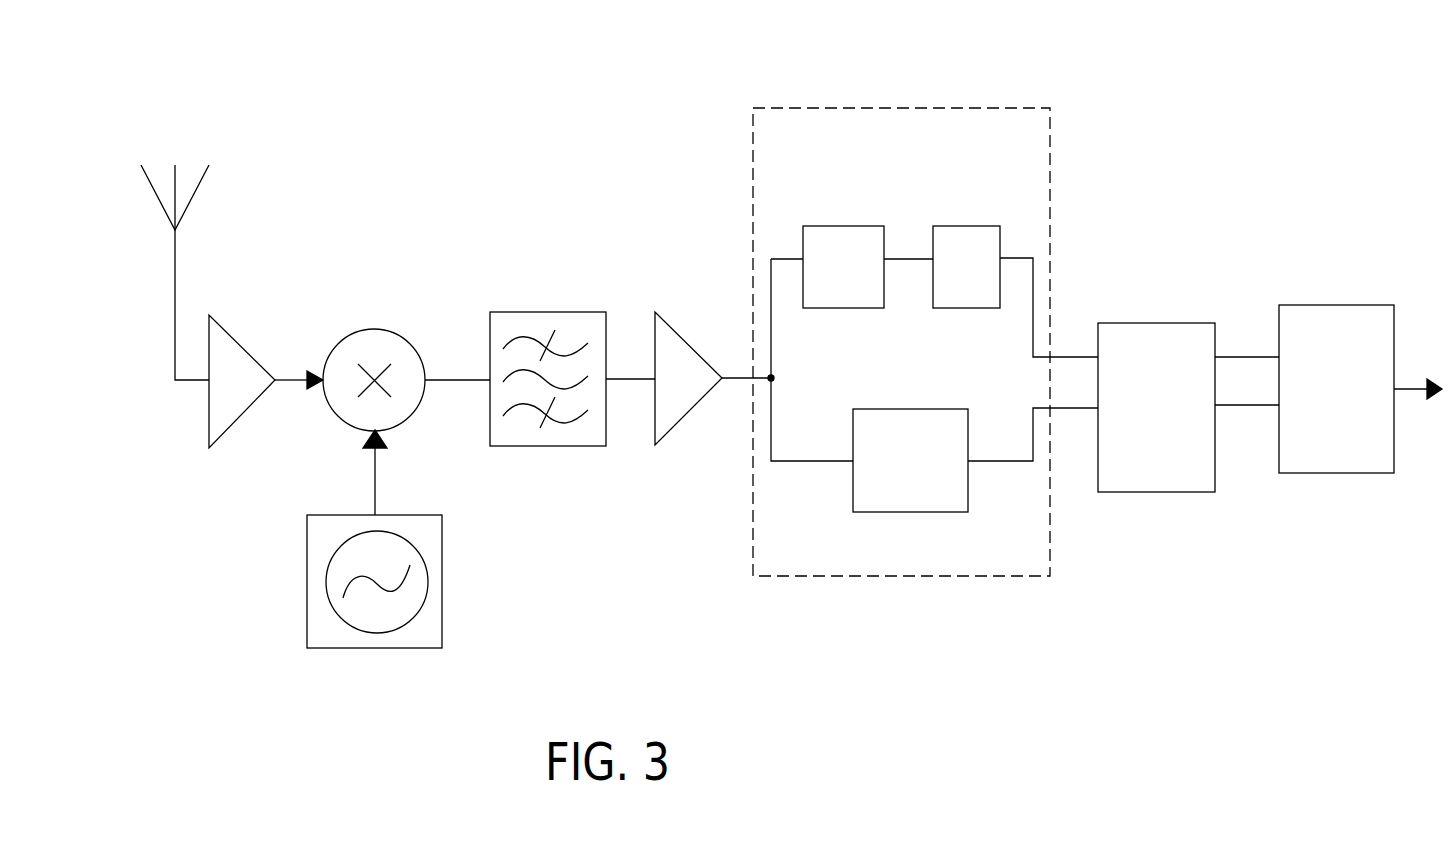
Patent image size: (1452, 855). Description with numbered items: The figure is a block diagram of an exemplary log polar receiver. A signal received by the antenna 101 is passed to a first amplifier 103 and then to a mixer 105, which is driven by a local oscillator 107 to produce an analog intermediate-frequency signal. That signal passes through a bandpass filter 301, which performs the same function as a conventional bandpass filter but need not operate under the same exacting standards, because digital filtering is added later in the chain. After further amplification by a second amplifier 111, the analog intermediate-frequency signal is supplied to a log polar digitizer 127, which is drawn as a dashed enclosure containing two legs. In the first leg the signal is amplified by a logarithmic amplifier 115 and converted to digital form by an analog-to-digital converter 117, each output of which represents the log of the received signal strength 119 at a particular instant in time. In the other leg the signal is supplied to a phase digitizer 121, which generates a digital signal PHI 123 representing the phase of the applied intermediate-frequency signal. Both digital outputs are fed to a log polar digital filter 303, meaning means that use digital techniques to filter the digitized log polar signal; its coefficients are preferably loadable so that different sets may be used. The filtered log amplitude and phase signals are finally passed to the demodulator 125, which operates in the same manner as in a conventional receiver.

The antenna 101 is at (176, 266).
The amplifier 103 is at (245, 348).
The mixer 105 is at (375, 329).
The local oscillator 107 is at (442, 566).
The bandpass filter 301 is at (538, 312).
The amplifier 111 is at (677, 327).
The log polar digitizer 127 is at (868, 108).
The logarithmic amplifier 115 is at (838, 226).
The analog-to-digital (A/D) converter 117 is at (953, 226).
The received signal strength (rss) 119 is at (1033, 291).
The phase digitizer 121 is at (892, 409).
The PHI 123 is at (985, 462).
The log polar digital filter 303 is at (1137, 323).
The demodulator 125 is at (1317, 305).